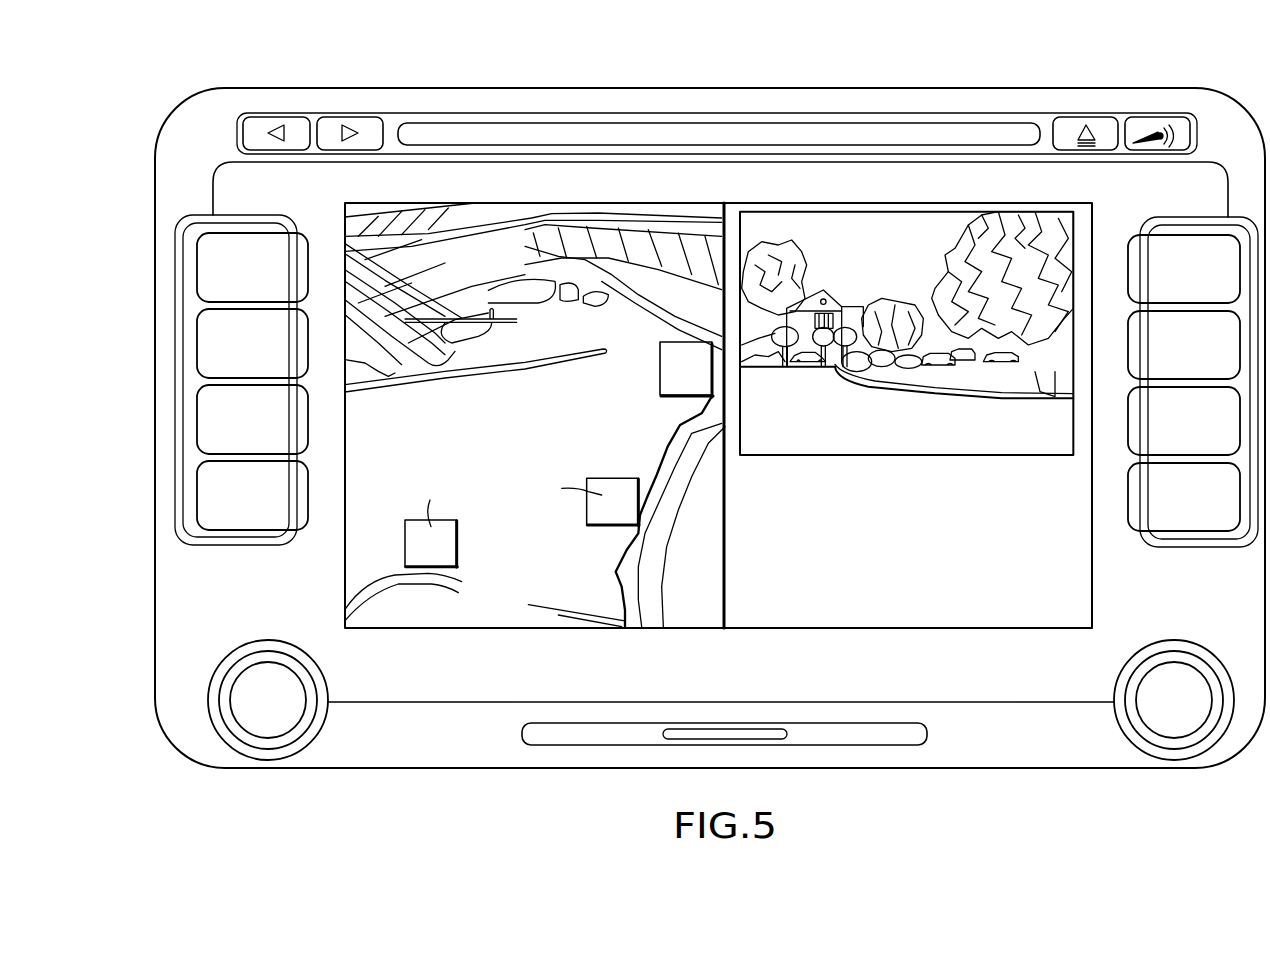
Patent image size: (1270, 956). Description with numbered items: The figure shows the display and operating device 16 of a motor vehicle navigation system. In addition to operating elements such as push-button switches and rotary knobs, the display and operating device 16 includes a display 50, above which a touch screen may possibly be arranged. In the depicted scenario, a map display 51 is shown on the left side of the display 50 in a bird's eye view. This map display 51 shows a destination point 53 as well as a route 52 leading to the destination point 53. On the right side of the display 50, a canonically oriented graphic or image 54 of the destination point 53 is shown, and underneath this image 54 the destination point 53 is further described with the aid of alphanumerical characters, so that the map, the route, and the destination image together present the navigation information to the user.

The display and operating device 16 is at (735, 102).
The display 50 is at (360, 208).
The map display 51 is at (443, 310).
The route 52 is at (655, 483).
The destination point 53 is at (660, 352).
The graphic or image of destination point 54 is at (878, 250).